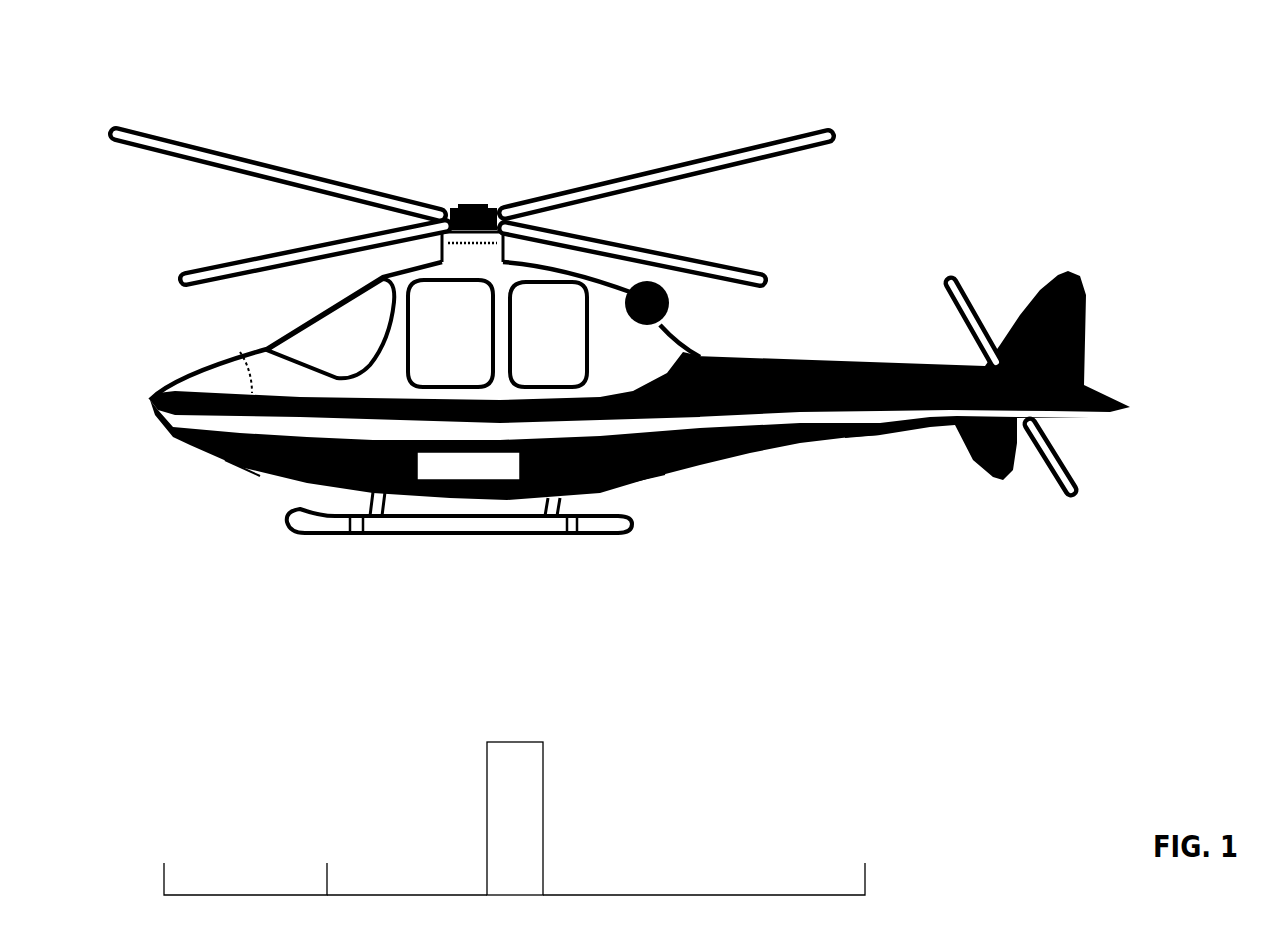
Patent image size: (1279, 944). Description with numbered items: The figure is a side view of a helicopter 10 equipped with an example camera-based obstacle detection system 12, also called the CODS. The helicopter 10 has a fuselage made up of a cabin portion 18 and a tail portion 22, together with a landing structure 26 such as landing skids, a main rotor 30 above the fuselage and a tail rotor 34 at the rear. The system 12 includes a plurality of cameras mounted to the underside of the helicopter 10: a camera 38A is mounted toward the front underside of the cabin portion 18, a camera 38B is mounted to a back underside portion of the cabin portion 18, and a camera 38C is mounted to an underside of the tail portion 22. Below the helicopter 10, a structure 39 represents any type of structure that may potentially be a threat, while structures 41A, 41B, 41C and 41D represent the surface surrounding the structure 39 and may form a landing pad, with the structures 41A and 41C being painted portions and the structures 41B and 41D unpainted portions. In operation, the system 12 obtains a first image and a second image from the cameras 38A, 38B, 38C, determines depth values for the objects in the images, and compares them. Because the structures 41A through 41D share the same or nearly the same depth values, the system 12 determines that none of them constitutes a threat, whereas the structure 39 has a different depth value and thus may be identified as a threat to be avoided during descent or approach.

The helicopter 10 is at (989, 113).
The camera-based obstacle detection system 12 is at (468, 466).
The cabin portion 18 is at (282, 312).
The tail portion 22 is at (811, 350).
The landing structure 26 is at (484, 538).
The main rotor 30 is at (244, 142).
The tail rotor 34 is at (1080, 471).
The camera 38A is at (242, 473).
The camera 38B is at (648, 481).
The camera 38C is at (864, 438).
The structure 39 is at (515, 818).
The structure 41A is at (245, 879).
The structure 41B is at (407, 881).
The structure 41C is at (621, 881).
The structure 41D is at (782, 879).